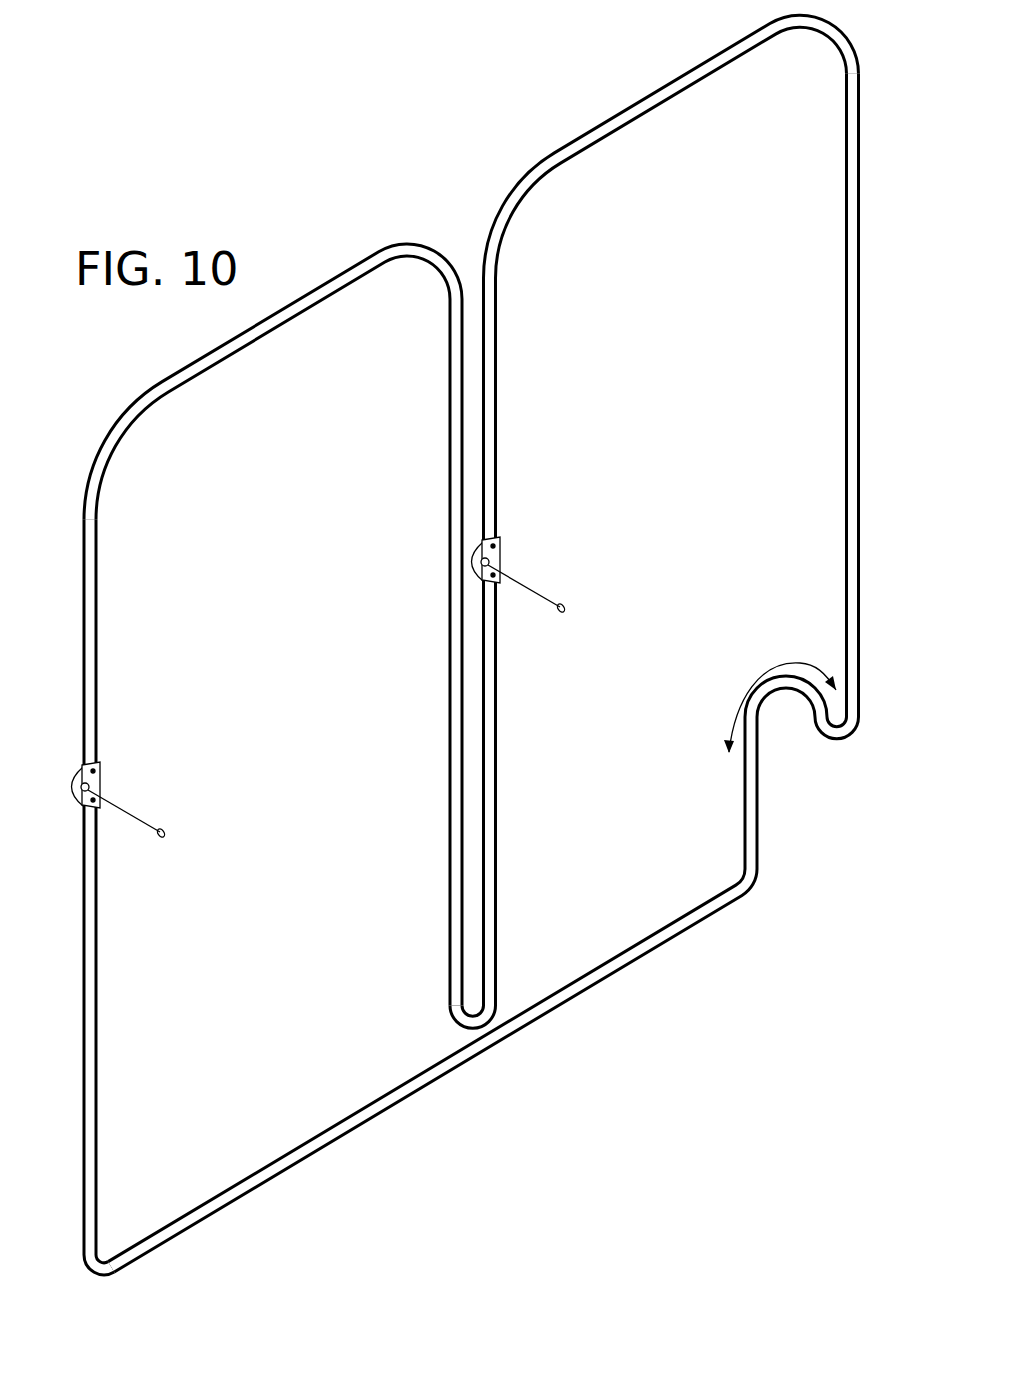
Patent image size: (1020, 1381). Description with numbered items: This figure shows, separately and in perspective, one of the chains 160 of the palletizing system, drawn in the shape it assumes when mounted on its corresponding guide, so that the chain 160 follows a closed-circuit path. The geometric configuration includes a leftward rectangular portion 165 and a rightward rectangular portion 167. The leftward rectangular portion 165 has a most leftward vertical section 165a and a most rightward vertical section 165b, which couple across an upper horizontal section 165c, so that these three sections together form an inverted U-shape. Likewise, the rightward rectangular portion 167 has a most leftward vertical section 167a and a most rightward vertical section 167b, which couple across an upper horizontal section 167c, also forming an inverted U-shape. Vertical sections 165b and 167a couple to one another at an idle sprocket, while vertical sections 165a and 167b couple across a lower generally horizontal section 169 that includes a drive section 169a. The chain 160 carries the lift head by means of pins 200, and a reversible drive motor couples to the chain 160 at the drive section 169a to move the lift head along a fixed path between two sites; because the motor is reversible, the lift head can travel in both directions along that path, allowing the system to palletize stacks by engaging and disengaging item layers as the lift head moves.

The chain 160 is at (479, 645).
The leftward rectangular portion 165 is at (243, 759).
The most leftward vertical section 165a is at (94, 583).
The most rightward vertical section 165b is at (450, 694).
The upper horizontal section 165c is at (237, 346).
The rightward rectangular portion 167 is at (692, 521).
The most leftward vertical section 167a is at (493, 403).
The most rightward vertical section 167b is at (846, 331).
The upper horizontal section 167c is at (683, 87).
The lower generally horizontal section 169 is at (481, 965).
The drive section 169a is at (781, 703).
The pin 200 is at (122, 808).